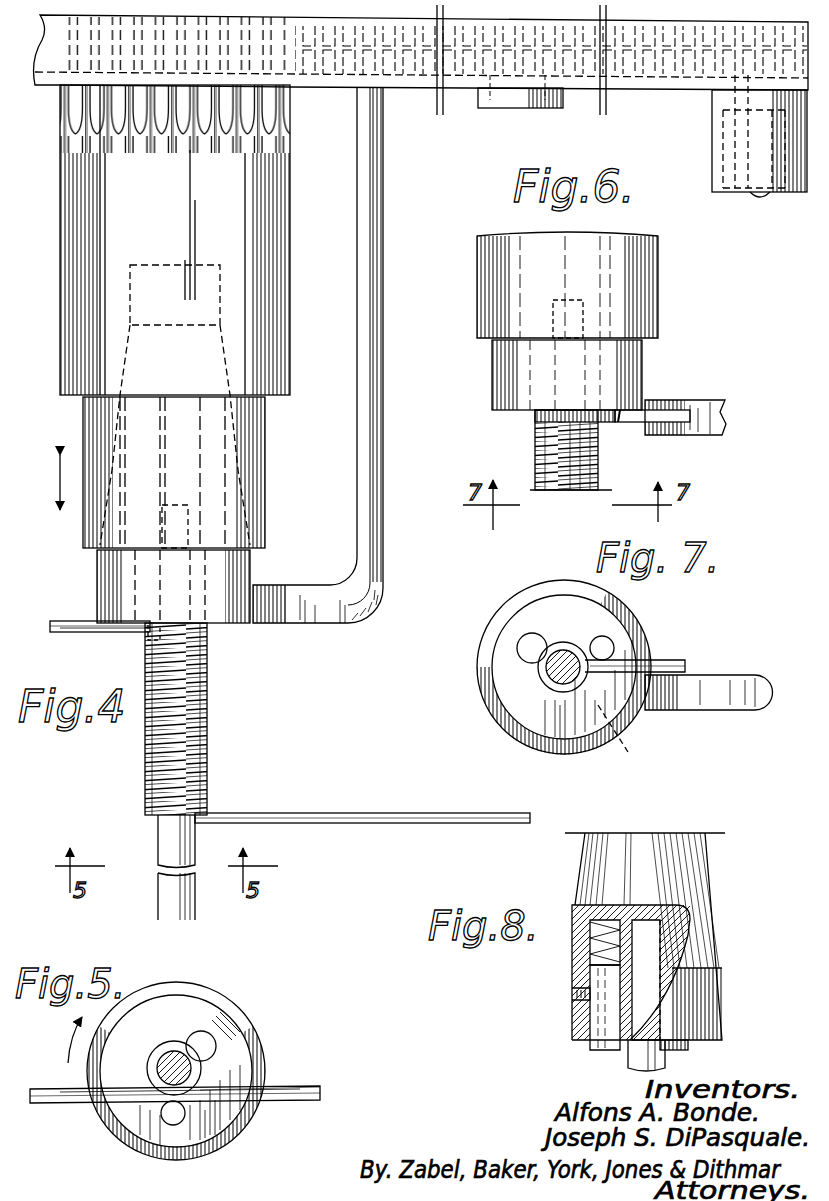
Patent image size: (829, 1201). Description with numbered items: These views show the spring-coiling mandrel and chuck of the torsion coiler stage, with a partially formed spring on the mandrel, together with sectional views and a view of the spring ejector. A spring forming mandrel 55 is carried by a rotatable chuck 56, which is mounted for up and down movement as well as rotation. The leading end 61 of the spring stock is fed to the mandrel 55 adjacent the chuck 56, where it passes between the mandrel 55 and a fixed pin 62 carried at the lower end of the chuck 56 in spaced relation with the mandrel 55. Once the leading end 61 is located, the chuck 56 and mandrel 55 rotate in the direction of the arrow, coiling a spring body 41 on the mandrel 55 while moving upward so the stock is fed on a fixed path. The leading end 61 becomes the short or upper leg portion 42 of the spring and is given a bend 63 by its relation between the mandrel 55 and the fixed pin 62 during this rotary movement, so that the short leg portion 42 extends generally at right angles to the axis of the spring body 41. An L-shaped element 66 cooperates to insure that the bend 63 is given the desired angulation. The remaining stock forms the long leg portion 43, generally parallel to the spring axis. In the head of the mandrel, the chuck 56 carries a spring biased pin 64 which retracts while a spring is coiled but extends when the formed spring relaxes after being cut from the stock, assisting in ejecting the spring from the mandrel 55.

In FIG. 4, the spring body 41 is at (207, 708).
In FIG. 6, the spring body 41 is at (600, 470).
In FIG. 7, the spring body 41 is at (560, 642).
In FIG. 5, the spring body 41 is at (162, 1052).
In FIG. 4, the short leg portion 42 is at (68, 632).
In FIG. 5, the short leg portion 42 is at (164, 1137).
In FIG. 4, the long leg portion 43 is at (334, 823).
In FIG. 5, the long leg portion 43 is at (285, 1105).
In FIG. 4, the spring forming mandrel 55 is at (158, 843).
In FIG. 6, the spring forming mandrel 55 is at (535, 440).
In FIG. 7, the spring forming mandrel 55 is at (565, 682).
In FIG. 5, the spring forming mandrel 55 is at (195, 1075).
In FIG. 8, the spring forming mandrel 55 is at (665, 1060).
In FIG. 4, the rotatable chuck 56 is at (288, 256).
In FIG. 6, the rotatable chuck 56 is at (492, 374).
In FIG. 7, the rotatable chuck 56 is at (493, 690).
In FIG. 5, the rotatable chuck 56 is at (200, 1005).
In FIG. 8, the rotatable chuck 56 is at (715, 995).
In FIG. 4, the leading end 61 is at (66, 620).
In FIG. 6, the leading end 61 is at (672, 410).
In FIG. 7, the leading end 61 is at (662, 660).
In FIG. 5, the leading end 61 is at (66, 1102).
In FIG. 4, the fixed pin 62 is at (146, 636).
In FIG. 6, the fixed pin 62 is at (628, 422).
In FIG. 7, the fixed pin 62 is at (610, 640).
In FIG. 5, the fixed pin 62 is at (185, 1122).
In FIG. 8, the fixed pin 62 is at (690, 1045).
In FIG. 7, the bend 63 is at (628, 743).
In FIG. 7, the spring biased pin 64 is at (528, 636).
In FIG. 5, the spring biased pin 64 is at (212, 1040).
In FIG. 8, the spring biased pin 64 is at (592, 1020).
In FIG. 4, the L-shaped element 66 is at (304, 596).
In FIG. 6, the L-shaped element 66 is at (715, 403).
In FIG. 7, the L-shaped element 66 is at (698, 712).